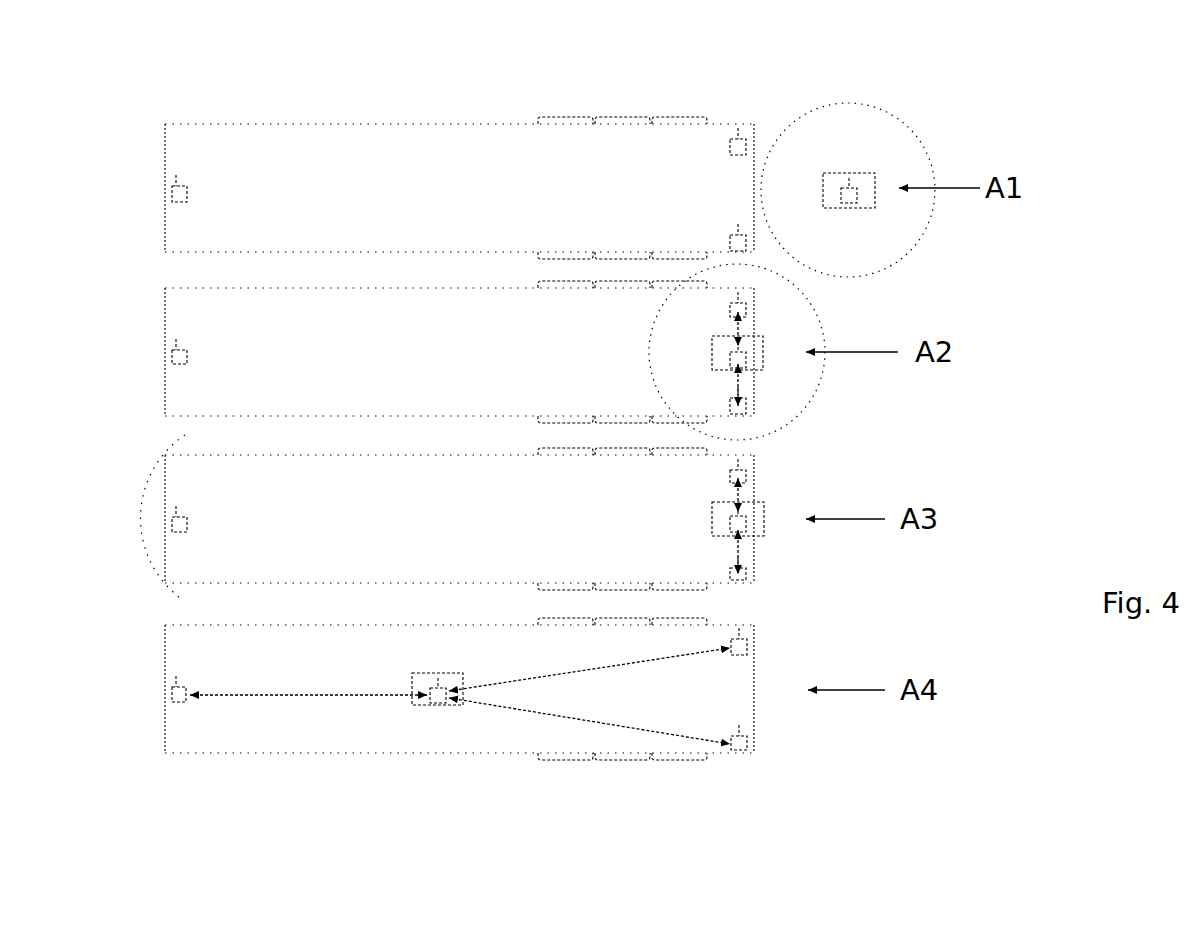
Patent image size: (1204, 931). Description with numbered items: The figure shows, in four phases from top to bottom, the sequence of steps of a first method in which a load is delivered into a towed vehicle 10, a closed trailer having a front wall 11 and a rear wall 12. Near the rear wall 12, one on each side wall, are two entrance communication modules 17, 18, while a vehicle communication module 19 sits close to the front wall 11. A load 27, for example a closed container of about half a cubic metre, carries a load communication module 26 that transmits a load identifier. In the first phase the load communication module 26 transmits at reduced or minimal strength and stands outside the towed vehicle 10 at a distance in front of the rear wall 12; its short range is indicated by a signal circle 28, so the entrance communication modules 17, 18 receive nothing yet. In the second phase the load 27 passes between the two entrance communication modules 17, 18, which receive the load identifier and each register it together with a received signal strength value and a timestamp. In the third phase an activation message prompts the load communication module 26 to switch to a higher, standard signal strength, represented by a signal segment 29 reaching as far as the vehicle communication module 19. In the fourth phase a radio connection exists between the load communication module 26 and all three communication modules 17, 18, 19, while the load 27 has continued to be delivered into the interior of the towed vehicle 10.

The towed vehicle 10 is at (294, 199).
The front wall 11 is at (165, 161).
The rear wall 12 is at (755, 130).
The entrance communication module 17 is at (736, 140).
The entrance communication module 18 is at (748, 244).
The vehicle communication module 19 is at (176, 193).
The load communication module 26 is at (848, 193).
The load 27 is at (865, 176).
The signal circle 28 is at (928, 158).
The signal segment 29 is at (152, 553).